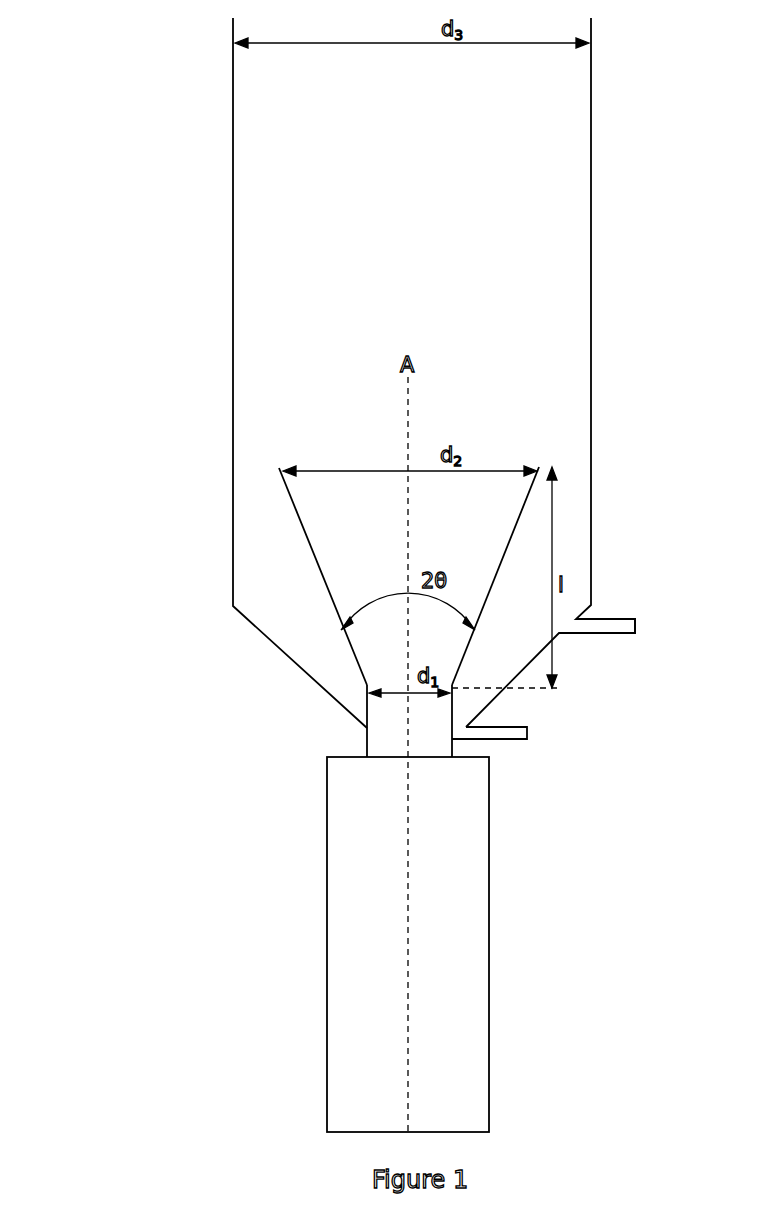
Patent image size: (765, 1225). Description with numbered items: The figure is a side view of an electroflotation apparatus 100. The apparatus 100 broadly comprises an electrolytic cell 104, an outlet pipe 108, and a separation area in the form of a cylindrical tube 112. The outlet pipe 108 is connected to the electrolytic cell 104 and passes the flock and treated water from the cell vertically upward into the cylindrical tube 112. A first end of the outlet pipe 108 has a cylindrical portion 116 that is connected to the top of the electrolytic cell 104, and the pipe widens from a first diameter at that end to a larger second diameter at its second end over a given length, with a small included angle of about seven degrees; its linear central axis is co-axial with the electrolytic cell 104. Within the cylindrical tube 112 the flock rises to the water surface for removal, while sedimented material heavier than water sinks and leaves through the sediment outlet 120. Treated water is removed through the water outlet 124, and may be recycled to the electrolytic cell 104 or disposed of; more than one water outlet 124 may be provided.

The electroflotation apparatus 100 is at (374, 575).
The electrolytic cell 104 is at (372, 874).
The outlet pipe 108 is at (286, 531).
The cylindrical tube 112 is at (233, 142).
The cylindrical portion 116 is at (387, 740).
The sediment outlet 120 is at (505, 733).
The water outlet 124 is at (613, 627).